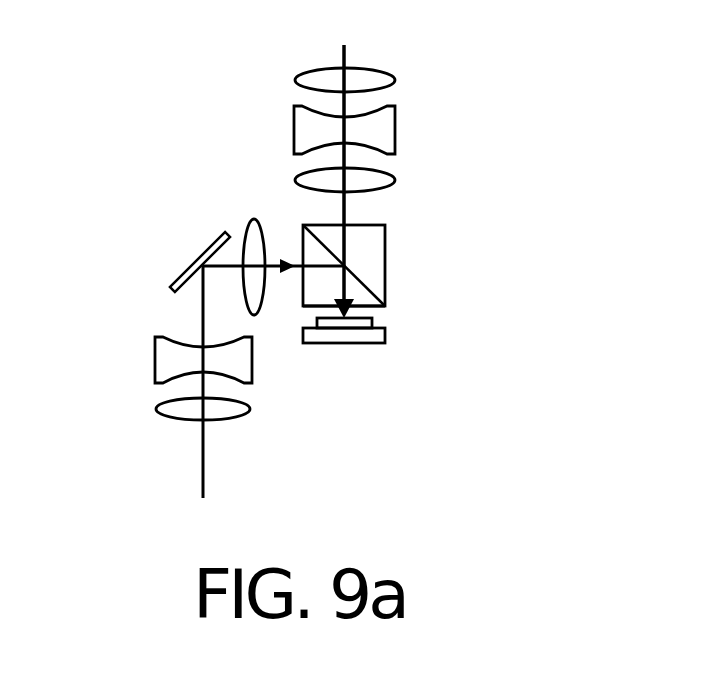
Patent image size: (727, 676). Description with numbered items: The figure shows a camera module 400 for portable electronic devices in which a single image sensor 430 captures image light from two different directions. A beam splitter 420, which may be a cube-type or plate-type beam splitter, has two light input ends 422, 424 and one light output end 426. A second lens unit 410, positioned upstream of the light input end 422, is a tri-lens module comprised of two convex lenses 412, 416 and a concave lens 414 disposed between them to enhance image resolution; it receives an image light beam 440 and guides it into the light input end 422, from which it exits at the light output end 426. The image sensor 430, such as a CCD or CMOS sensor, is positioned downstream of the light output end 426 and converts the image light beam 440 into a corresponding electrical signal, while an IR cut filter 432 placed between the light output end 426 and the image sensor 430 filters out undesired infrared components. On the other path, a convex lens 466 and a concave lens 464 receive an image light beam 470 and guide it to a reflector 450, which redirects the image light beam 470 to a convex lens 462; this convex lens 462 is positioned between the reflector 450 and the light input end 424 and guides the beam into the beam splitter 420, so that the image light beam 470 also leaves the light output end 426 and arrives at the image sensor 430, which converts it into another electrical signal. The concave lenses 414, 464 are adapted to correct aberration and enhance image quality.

The camera module 400 is at (575, 55).
The second lens unit 410 is at (240, 117).
The convex lens 412 is at (293, 80).
The concave lens 414 is at (294, 130).
The convex lens 416 is at (293, 180).
The beam splitter 420 is at (395, 257).
The light input end 422 is at (377, 225).
The light input end 424 is at (300, 245).
The light output end 426 is at (373, 307).
The image sensor 430 is at (387, 335).
The IR cut filter 432 is at (372, 323).
The image light beam 440 is at (346, 161).
The reflector 450 is at (197, 260).
The convex lens 462 is at (260, 300).
The concave lens 464 is at (155, 362).
The convex lens 466 is at (157, 410).
The image light beam 470 is at (205, 403).